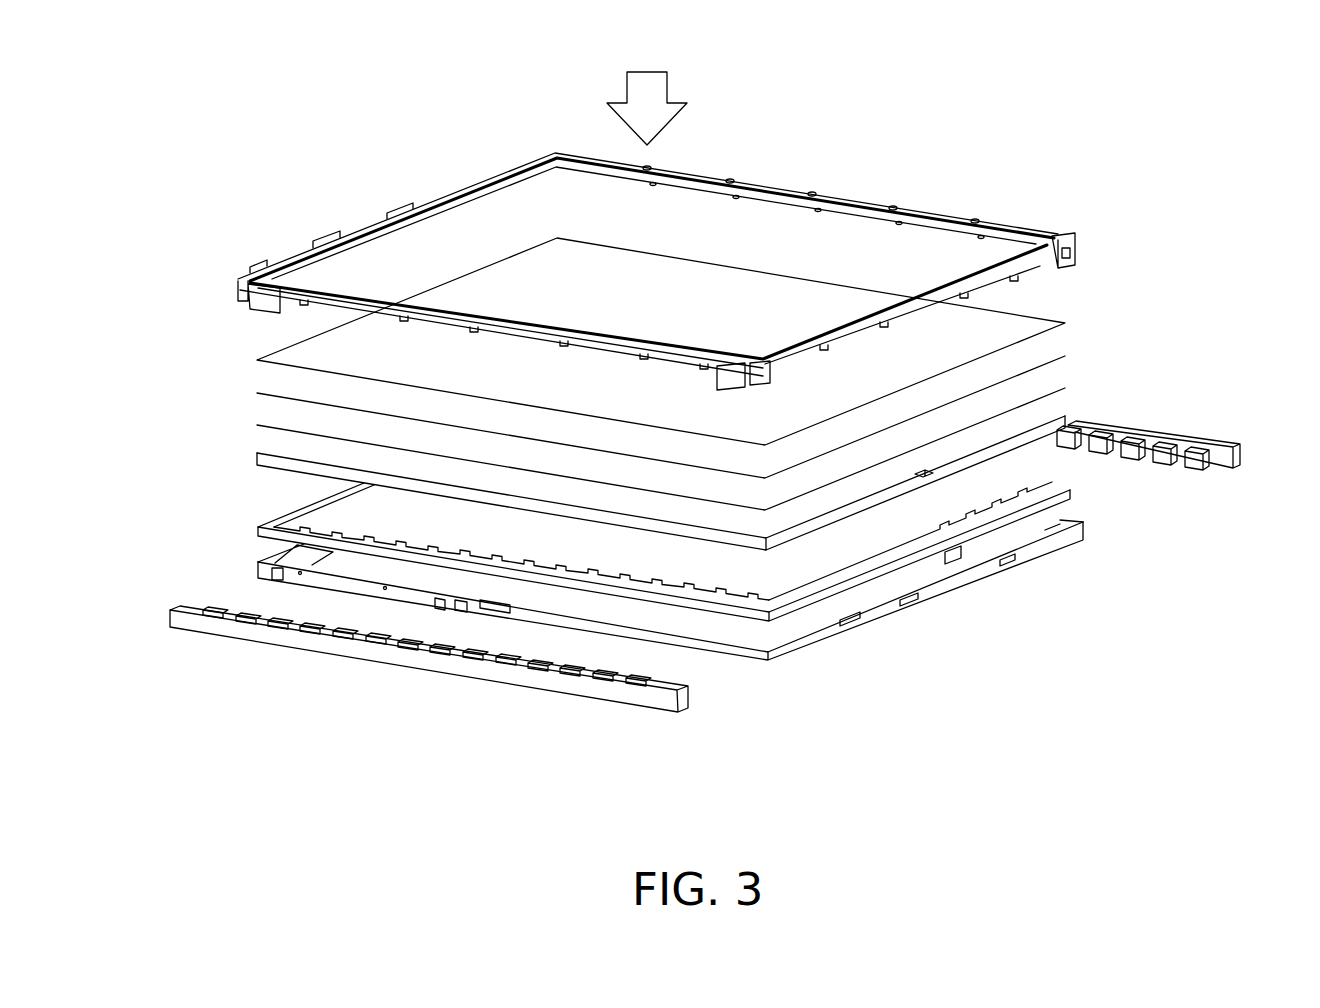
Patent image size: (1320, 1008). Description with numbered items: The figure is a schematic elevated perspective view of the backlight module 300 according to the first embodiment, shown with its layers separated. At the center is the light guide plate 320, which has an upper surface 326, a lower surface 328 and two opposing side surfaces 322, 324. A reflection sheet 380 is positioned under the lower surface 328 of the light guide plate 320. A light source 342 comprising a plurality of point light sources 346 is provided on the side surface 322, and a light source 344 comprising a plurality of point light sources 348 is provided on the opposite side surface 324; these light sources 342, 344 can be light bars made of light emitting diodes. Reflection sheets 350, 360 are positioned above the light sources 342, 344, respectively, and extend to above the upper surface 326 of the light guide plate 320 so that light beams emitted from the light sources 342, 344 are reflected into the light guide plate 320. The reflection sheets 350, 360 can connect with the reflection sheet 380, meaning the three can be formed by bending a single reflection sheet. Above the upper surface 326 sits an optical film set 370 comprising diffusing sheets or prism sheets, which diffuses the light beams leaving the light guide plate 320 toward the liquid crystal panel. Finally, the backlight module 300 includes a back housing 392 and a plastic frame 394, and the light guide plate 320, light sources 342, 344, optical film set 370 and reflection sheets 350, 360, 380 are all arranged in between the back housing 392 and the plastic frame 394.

The backlight module 300 is at (500, 157).
The plastic frame 394 is at (1046, 228).
The optical film set 370 is at (1070, 323).
The side surface 324 is at (1048, 408).
The light guide plate 320 is at (1067, 418).
The side surface 322 is at (743, 538).
The lower surface 328 is at (843, 520).
The upper surface 326 is at (972, 437).
The reflection sheet 360 is at (1053, 480).
The reflection sheet 380 is at (880, 587).
The back housing 392 is at (953, 557).
The reflection sheet 350 is at (493, 577).
The light source 342 is at (178, 640).
The point light sources 346 is at (220, 607).
The light source 344 is at (1225, 424).
The point light sources 348 is at (1193, 460).